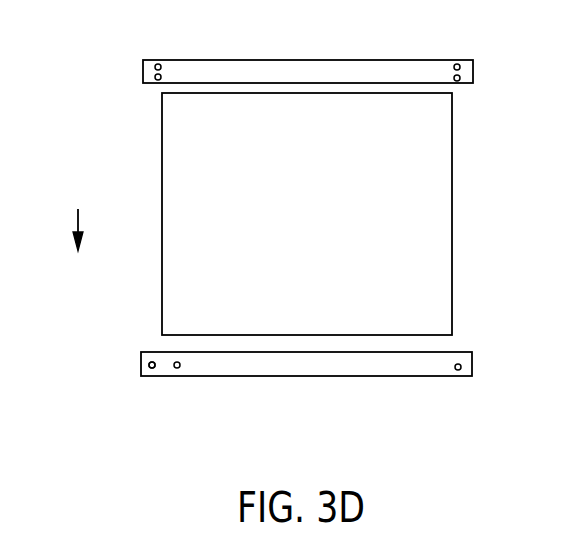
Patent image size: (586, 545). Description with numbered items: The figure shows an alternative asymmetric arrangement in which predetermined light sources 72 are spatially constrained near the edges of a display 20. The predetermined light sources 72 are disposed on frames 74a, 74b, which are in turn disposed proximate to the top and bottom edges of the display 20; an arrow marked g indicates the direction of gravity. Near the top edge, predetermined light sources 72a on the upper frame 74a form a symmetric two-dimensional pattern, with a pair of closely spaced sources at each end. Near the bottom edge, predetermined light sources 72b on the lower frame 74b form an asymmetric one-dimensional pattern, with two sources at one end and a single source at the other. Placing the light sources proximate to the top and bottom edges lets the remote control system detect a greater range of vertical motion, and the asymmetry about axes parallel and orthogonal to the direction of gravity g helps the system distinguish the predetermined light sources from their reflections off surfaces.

The display 20 is at (445, 209).
The frame 74a is at (316, 70).
The frame 74b is at (305, 370).
The predetermined light sources 72 is at (152, 377).
The predetermined light sources 72a is at (158, 62).
The predetermined light sources 72b is at (177, 377).
The gravity direction g is at (73, 223).